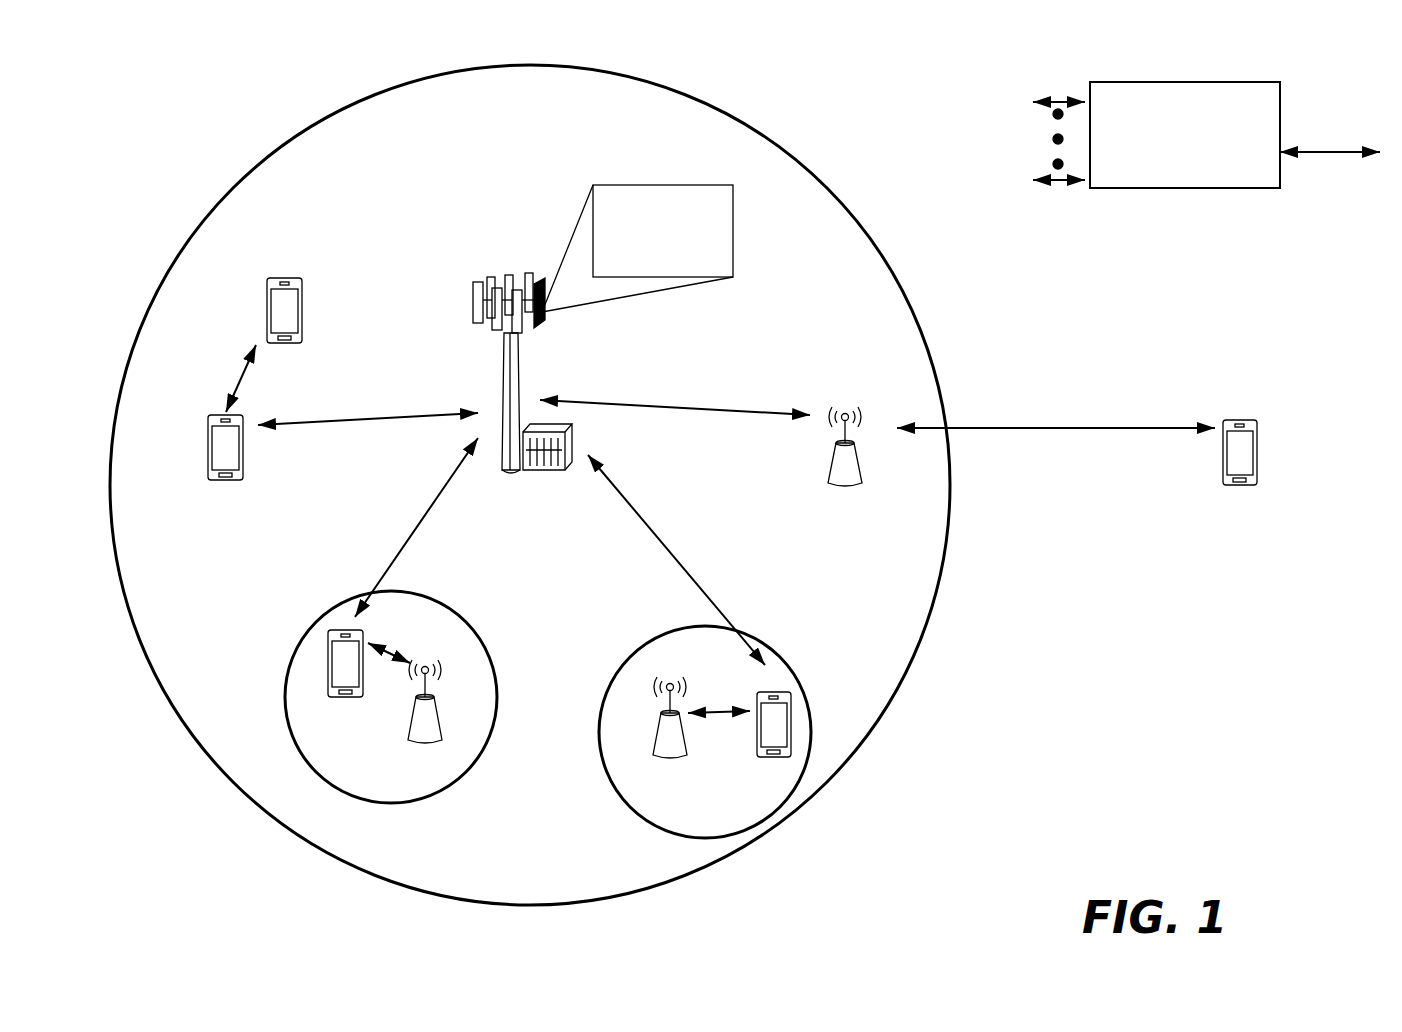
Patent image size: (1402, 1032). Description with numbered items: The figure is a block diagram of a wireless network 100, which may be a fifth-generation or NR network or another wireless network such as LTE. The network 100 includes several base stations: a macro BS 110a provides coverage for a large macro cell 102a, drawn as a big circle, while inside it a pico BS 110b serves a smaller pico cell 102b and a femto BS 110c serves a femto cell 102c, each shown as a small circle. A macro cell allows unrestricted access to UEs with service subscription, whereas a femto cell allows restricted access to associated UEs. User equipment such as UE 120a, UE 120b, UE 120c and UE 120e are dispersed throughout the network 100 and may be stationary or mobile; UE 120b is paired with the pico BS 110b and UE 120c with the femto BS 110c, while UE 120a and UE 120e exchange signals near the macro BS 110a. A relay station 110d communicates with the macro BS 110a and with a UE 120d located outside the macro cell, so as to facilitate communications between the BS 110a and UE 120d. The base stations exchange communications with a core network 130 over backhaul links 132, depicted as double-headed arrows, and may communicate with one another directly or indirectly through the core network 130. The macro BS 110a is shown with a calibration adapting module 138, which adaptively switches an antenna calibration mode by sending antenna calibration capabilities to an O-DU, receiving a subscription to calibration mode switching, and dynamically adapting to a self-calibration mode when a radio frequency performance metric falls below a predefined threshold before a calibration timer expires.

The wireless network 100 is at (190, 108).
The macro cell 102a is at (808, 170).
The pico cell 102b is at (480, 638).
The femto cell 102c is at (645, 645).
The macro BS 110a is at (518, 265).
The pico BS 110b is at (446, 726).
The femto BS 110c is at (655, 745).
The relay station 110d is at (845, 408).
The UE 120a is at (208, 445).
The UE 120b is at (330, 697).
The UE 120c is at (757, 757).
The UE 120d is at (1257, 485).
The UE 120e is at (267, 300).
The core network 130 is at (1158, 82).
The backhaul links 132 is at (1060, 96).
The calibration adapting module 138 is at (735, 222).